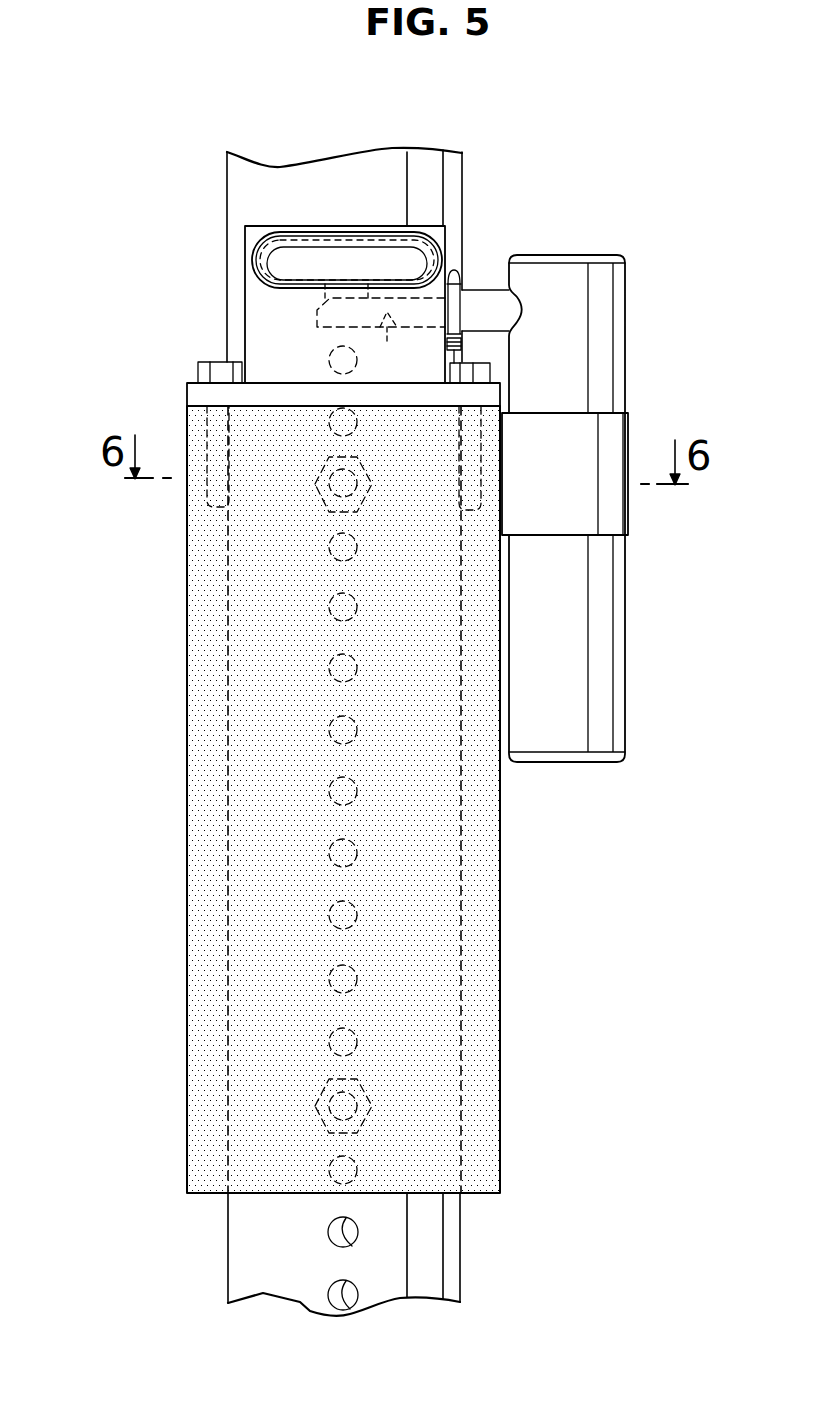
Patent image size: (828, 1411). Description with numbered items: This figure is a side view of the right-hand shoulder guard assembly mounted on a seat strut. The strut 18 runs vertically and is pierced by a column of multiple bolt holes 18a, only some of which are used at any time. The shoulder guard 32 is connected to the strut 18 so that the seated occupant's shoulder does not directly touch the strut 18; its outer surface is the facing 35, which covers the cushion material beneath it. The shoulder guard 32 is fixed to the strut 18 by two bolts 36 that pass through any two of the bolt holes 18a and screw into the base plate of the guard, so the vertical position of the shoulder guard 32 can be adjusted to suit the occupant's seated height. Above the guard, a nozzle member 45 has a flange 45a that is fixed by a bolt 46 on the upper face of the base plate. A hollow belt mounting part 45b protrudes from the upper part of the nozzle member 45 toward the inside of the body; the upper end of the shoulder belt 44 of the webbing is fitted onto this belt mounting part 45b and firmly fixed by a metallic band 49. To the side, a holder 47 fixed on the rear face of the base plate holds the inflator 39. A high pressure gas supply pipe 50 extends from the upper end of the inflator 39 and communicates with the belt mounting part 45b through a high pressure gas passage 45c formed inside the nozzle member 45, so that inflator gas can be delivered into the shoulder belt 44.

The strut 18 is at (220, 212).
The bolt holes 18a is at (352, 663).
The shoulder guard 32 is at (178, 712).
The facing 35 is at (198, 958).
The bolts 36 is at (318, 485).
The inflator 39 is at (608, 365).
The shoulder belt 44 is at (296, 289).
The nozzle member 45 is at (238, 298).
The flange 45a is at (190, 398).
The belt mounting part 45b is at (278, 247).
The high pressure gas passage 45c is at (381, 337).
The bolt 46 is at (222, 360).
The holder 47 is at (572, 510).
The metallic band 49 is at (320, 232).
The high pressure gas supply pipe 50 is at (483, 298).